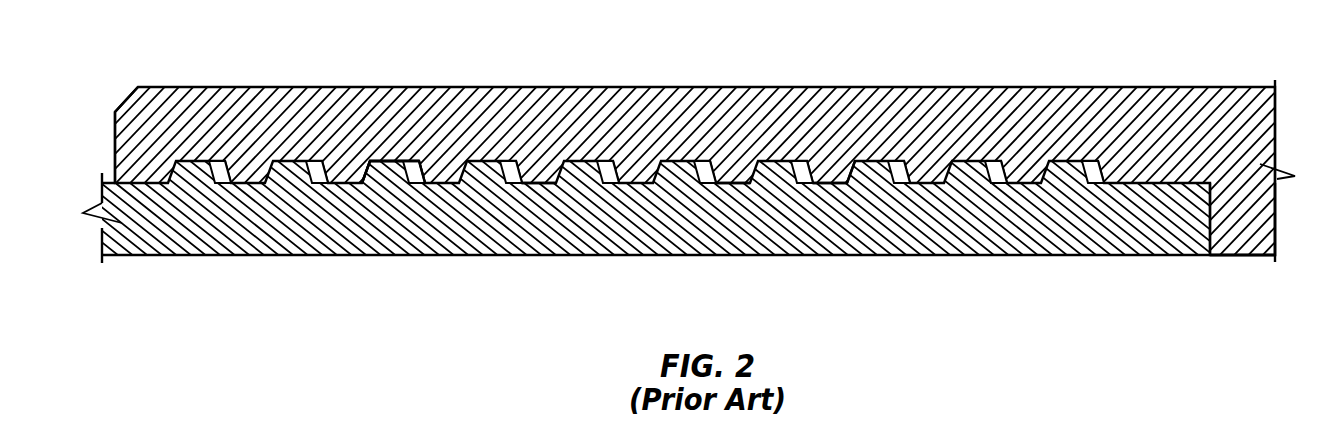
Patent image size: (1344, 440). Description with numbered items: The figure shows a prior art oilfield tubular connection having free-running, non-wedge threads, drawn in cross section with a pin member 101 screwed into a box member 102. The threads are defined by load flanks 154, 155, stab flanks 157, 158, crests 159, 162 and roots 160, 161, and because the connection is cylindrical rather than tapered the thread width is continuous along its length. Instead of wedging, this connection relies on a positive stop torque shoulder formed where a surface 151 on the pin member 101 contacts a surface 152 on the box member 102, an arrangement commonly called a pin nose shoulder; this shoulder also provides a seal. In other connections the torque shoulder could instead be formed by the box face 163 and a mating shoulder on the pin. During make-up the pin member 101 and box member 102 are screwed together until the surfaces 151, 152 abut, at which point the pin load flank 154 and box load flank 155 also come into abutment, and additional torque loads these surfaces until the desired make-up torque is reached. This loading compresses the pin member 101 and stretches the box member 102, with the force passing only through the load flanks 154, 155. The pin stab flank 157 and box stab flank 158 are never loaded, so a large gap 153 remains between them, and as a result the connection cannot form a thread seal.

The pin member 101 is at (224, 231).
The box member 102 is at (1211, 147).
The surface 151 is at (1217, 223).
The surface 152 is at (1207, 227).
The gap 153 is at (217, 168).
The pin load flank 154 is at (845, 180).
The box load flank 155 is at (856, 178).
The pin stab flank 157 is at (713, 177).
The box stab flank 158 is at (706, 179).
The crest 159 is at (380, 160).
The root 160 is at (388, 163).
The root 161 is at (530, 175).
The crest 162 is at (543, 183).
The box face 163 is at (113, 147).